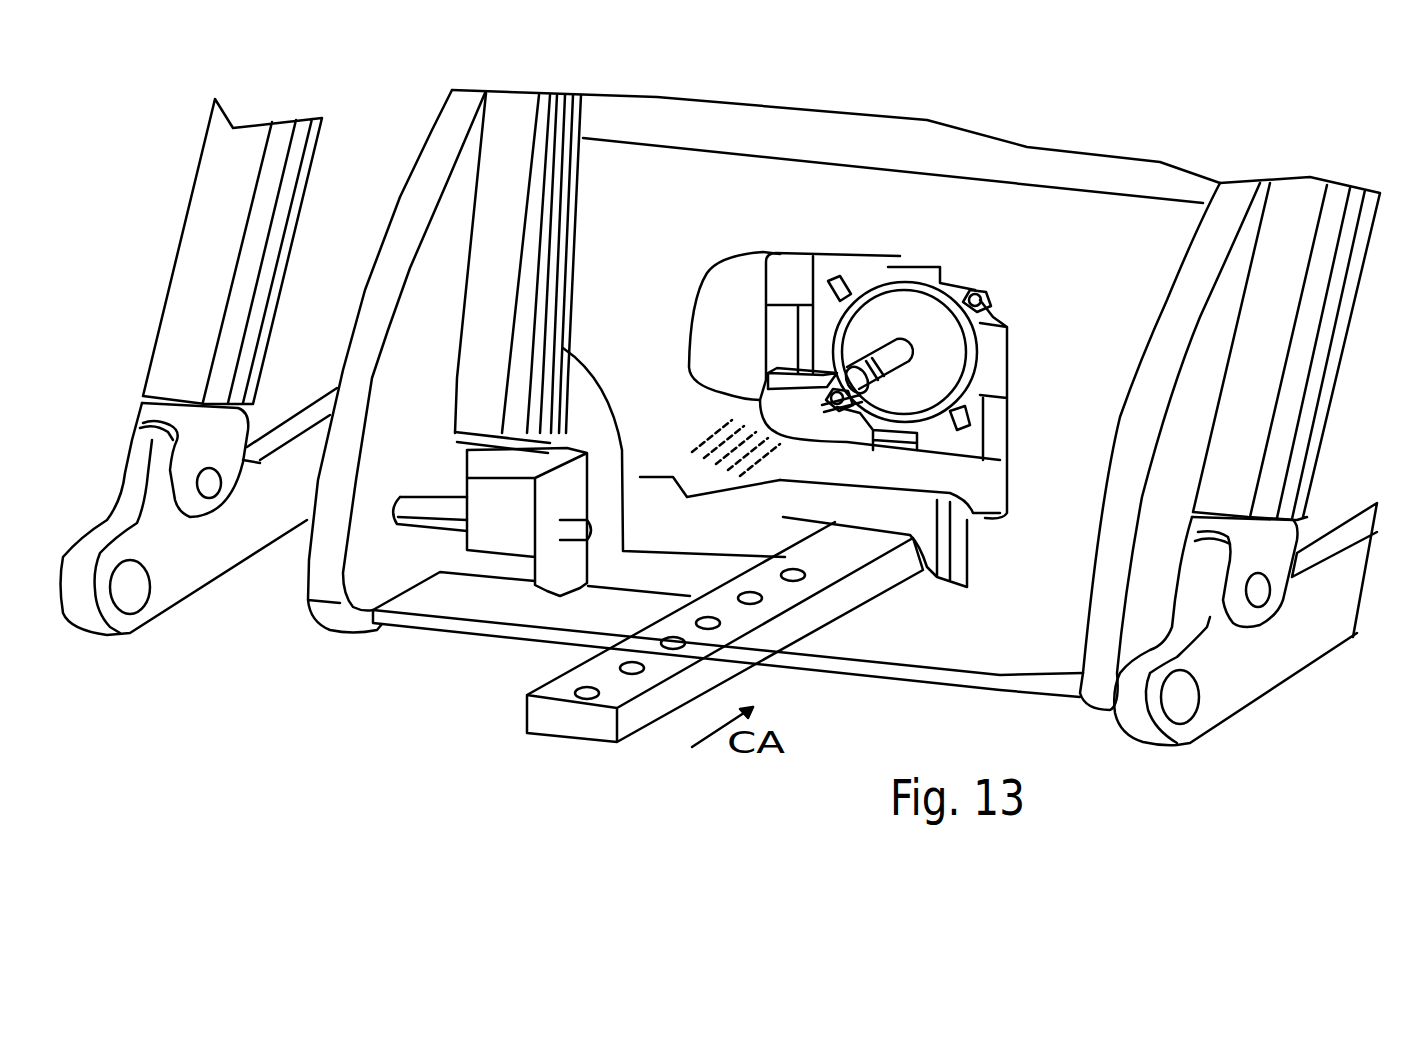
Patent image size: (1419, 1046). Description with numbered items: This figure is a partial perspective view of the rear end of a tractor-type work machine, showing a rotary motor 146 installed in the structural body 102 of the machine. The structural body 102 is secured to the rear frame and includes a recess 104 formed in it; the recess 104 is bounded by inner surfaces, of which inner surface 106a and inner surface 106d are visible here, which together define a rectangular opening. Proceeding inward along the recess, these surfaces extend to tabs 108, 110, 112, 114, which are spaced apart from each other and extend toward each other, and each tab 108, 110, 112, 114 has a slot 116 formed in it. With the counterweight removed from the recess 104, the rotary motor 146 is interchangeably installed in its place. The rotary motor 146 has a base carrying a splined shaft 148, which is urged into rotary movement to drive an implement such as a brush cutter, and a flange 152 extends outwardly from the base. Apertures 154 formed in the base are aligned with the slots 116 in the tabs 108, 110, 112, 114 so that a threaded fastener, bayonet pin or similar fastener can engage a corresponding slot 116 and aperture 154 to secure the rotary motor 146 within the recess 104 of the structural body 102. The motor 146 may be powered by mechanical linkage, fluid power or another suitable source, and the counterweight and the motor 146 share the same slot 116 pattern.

The structural body 102 is at (1072, 563).
The recess 104 is at (743, 467).
The inner surface 106a is at (723, 273).
The inner surface 106d is at (903, 473).
The tab 108 is at (762, 398).
The tab 110 is at (780, 257).
The tab 112 is at (952, 280).
The tab 114 is at (990, 452).
The slot 116 is at (836, 276).
The rotary motor 146 is at (950, 367).
The splined shaft 148 is at (857, 357).
The flange 152 is at (840, 333).
The aperture 154 is at (982, 283).